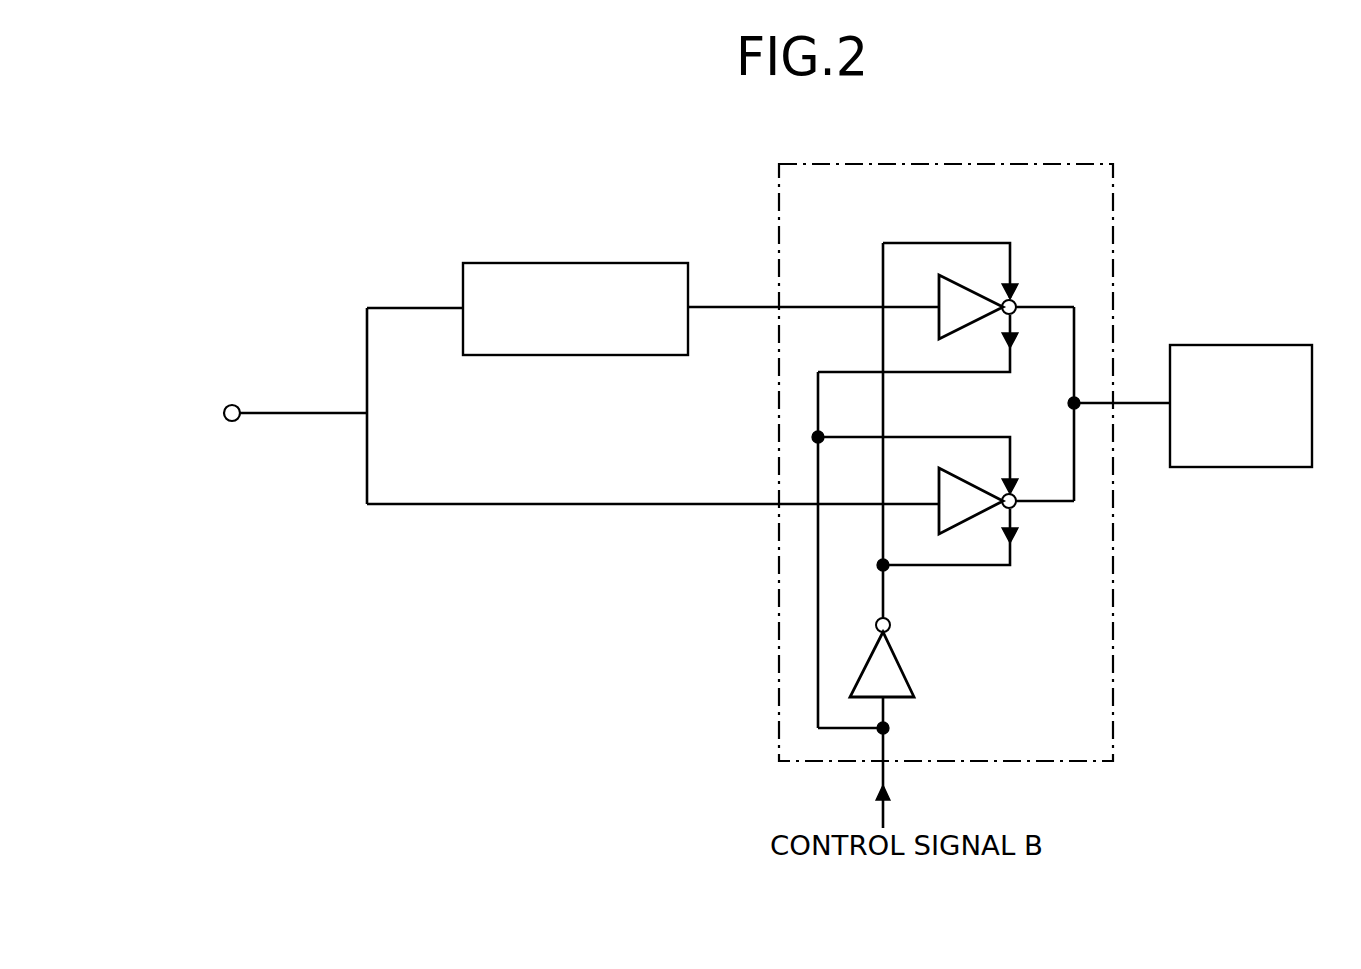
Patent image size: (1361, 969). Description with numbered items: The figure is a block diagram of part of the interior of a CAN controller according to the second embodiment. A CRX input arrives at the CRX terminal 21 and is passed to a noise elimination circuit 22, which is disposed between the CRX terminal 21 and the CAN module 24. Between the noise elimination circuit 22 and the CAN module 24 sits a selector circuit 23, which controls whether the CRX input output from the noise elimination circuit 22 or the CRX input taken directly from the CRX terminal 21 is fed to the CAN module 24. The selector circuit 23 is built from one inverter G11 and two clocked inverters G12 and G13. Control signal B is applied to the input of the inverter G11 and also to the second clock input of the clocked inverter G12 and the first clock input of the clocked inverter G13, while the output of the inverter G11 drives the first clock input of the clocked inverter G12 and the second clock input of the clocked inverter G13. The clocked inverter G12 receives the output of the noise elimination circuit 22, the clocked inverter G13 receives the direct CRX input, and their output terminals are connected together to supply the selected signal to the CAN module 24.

The CRX terminal 21 is at (233, 405).
The noise elimination circuit 22 is at (651, 266).
The selector circuit 23 is at (1056, 168).
The CAN module 24 is at (1282, 348).
The inverter G11 is at (908, 678).
The clocked inverter G12 is at (968, 284).
The clocked inverter G13 is at (970, 520).